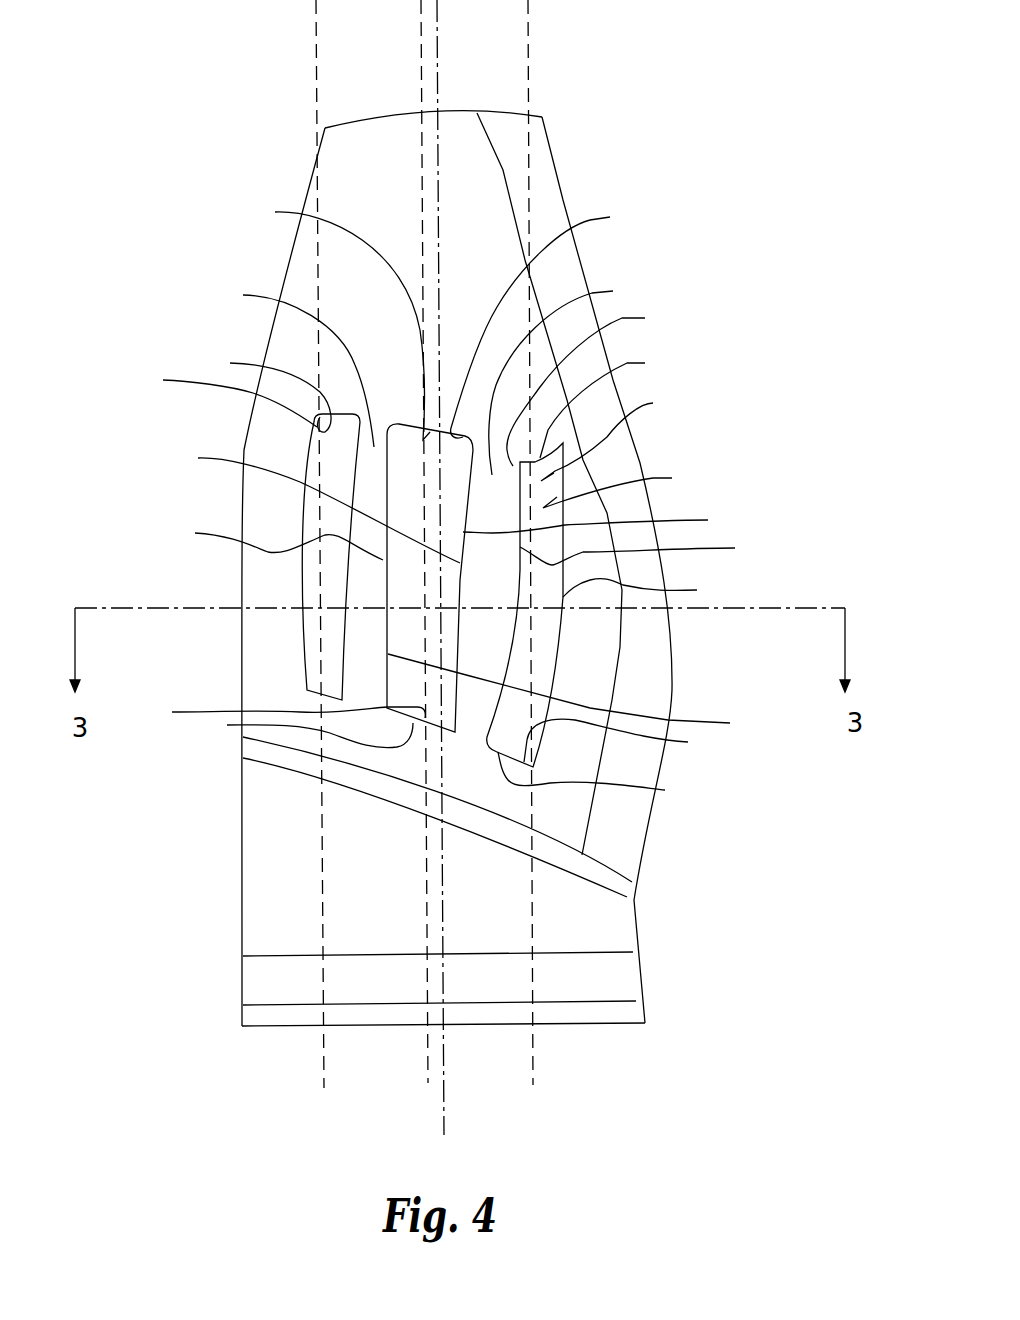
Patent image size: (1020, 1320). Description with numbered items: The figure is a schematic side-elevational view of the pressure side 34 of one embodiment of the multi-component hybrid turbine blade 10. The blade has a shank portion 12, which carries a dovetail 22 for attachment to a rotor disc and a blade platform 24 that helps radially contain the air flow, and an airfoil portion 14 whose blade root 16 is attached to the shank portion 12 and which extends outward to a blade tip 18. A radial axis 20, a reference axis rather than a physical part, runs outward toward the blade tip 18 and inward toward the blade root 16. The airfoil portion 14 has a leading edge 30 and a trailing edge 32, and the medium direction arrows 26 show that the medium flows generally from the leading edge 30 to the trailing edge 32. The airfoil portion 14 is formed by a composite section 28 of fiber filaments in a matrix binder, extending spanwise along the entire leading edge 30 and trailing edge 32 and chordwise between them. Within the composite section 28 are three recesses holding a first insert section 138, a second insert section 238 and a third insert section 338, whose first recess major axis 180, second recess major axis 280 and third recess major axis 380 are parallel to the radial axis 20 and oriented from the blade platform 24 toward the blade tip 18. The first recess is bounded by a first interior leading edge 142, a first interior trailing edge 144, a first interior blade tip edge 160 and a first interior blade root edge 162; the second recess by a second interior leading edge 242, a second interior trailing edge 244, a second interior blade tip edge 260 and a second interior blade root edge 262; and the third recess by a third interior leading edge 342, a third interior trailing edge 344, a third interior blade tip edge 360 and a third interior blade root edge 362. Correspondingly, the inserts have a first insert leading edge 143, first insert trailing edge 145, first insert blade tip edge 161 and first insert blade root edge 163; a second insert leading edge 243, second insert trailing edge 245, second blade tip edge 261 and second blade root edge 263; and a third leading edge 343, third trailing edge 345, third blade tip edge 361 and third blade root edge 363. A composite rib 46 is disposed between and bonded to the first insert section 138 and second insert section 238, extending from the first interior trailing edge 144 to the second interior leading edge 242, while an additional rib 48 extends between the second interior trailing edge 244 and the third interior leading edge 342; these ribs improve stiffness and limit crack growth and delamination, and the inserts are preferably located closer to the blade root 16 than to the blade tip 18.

The multi-component hybrid turbine blade 10 is at (340, 29).
The shank portion 12 is at (262, 908).
The airfoil portion 14 is at (126, 541).
The blade root 16 is at (563, 848).
The blade tip 18 is at (387, 113).
The radial axis 20 is at (445, 1125).
The dovetail 22 is at (260, 975).
The blade platform 24 is at (253, 750).
The medium direction arrows 26 is at (616, 262).
The composite section 28 is at (355, 204).
The leading edge 30 is at (670, 693).
The trailing edge 32 is at (267, 338).
The pressure side 34 is at (300, 262).
The rib 46 is at (565, 377).
The additional rib 48 is at (291, 365).
The first insert section 138 is at (514, 657).
The first interior leading edge 142 is at (625, 487).
The first insert leading edge 143 is at (646, 590).
The first interior trailing edge 144 is at (645, 550).
The first insert trailing edge 145 is at (595, 386).
The first interior blade tip edge 160 is at (613, 436).
The first insert blade tip edge 161 is at (611, 404).
The first interior blade root edge 162 is at (623, 740).
The first insert blade root edge 163 is at (599, 777).
The first recess major axis 180 is at (532, 1050).
The second insert section 238 is at (414, 507).
The second interior leading edge 242 is at (307, 505).
The second insert leading edge 243 is at (604, 520).
The second interior trailing edge 244 is at (578, 695).
The second insert trailing edge 245 is at (268, 541).
The second interior blade tip edge 260 is at (329, 320).
The second blade tip edge 261 is at (549, 320).
The second interior blade root edge 262 is at (276, 712).
The second blade root edge 263 is at (299, 730).
The second recess major axis 280 is at (425, 1050).
The third insert section 338 is at (312, 474).
The third interior leading edge 342 is at (307, 521).
The third leading edge 343 is at (345, 590).
The third interior trailing edge 344 is at (307, 592).
The third trailing edge 345 is at (302, 630).
The third interior blade tip edge 360 is at (217, 397).
The third blade tip edge 361 is at (259, 391).
The third interior blade root edge 362 is at (320, 690).
The third blade root edge 363 is at (315, 696).
The third recess major axis 380 is at (322, 1050).